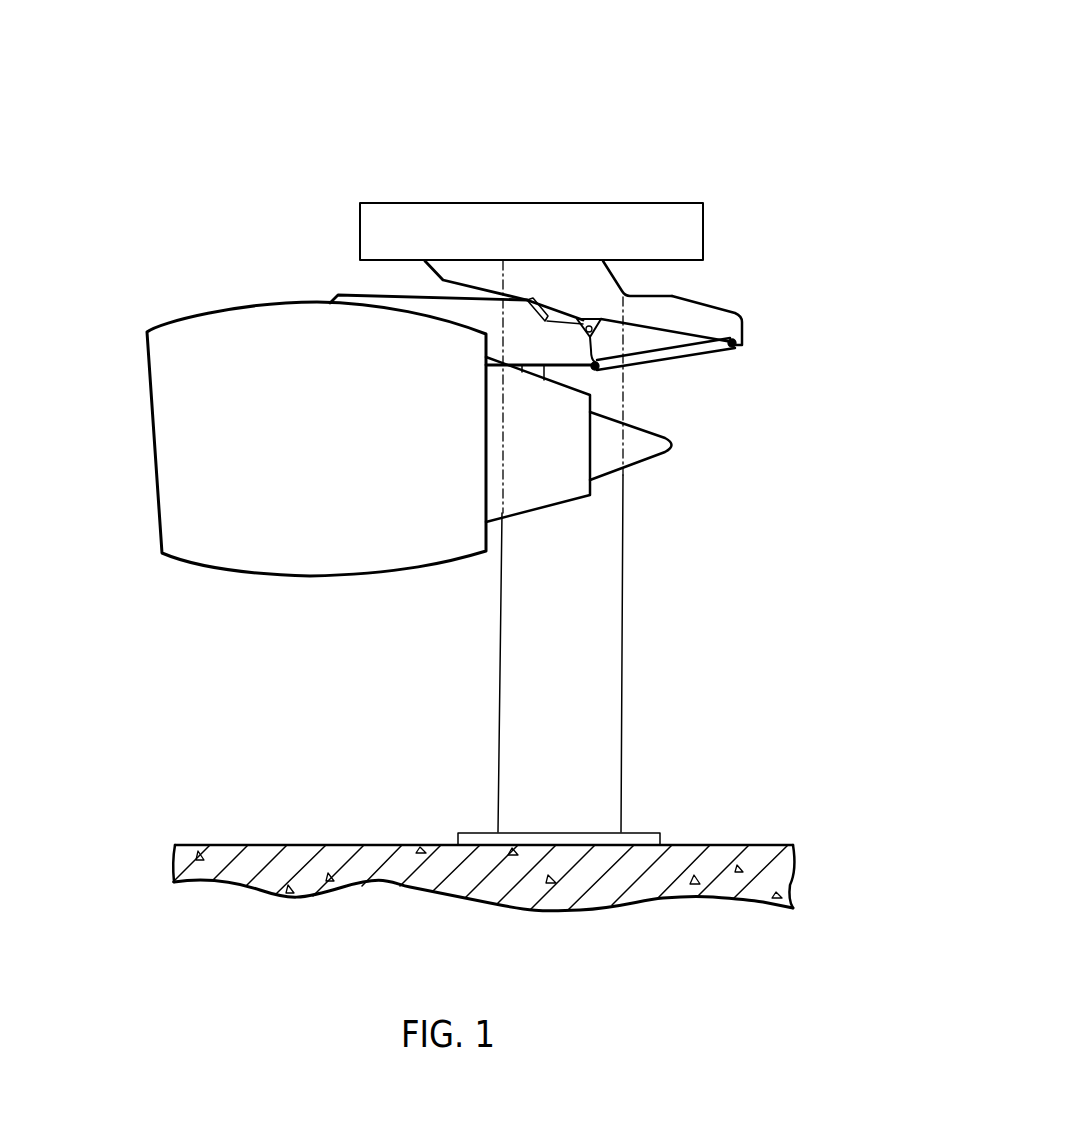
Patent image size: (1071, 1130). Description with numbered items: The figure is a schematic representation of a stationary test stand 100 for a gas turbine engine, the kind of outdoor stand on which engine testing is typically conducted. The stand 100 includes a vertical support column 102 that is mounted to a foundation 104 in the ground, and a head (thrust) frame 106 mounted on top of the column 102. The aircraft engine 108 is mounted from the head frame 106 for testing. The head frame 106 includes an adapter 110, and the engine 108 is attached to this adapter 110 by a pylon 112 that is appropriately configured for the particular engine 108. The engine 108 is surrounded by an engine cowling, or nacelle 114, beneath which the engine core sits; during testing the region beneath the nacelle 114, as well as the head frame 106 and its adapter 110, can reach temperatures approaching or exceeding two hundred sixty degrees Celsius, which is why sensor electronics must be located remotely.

The test stand 100 is at (672, 88).
The vertical support column 102 is at (597, 661).
The foundation 104 is at (725, 852).
The head (thrust) frame 106 is at (365, 223).
The aircraft engine 108 is at (174, 512).
The adapter 110 is at (653, 303).
The pylon 112 is at (383, 299).
The engine cowling (nacelle) 114 is at (128, 368).